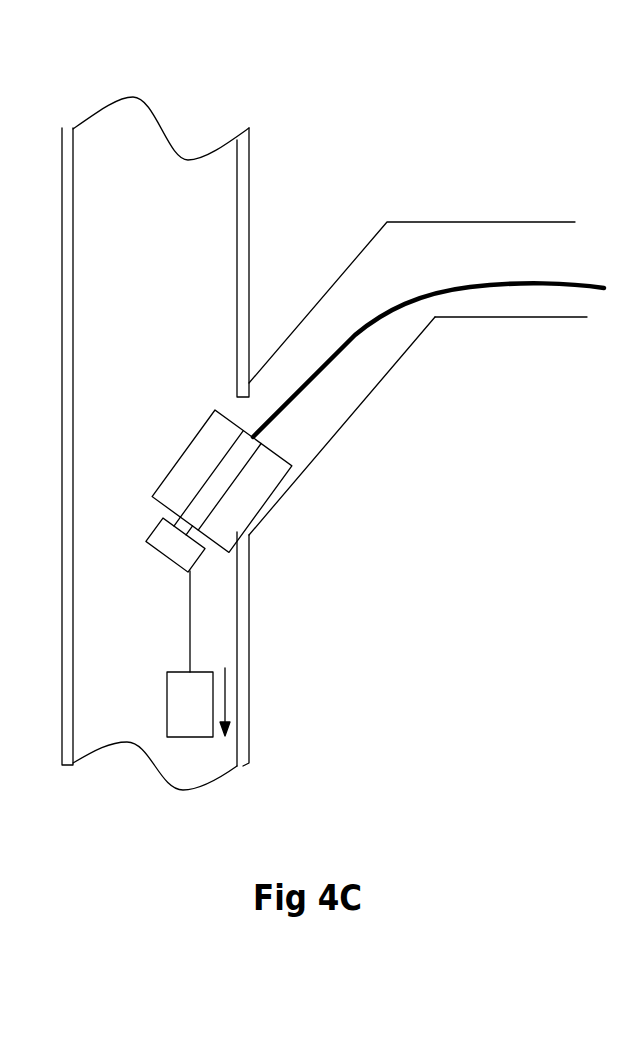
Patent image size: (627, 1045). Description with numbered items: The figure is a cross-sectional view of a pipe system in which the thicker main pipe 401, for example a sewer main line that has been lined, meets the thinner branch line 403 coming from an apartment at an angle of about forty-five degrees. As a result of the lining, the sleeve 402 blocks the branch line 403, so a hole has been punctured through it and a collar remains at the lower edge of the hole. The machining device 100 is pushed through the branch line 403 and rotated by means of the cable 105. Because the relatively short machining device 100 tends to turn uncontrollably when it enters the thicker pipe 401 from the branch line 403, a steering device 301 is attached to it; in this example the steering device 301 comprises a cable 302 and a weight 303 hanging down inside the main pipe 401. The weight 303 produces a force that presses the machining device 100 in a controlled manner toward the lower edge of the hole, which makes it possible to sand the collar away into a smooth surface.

The pipe 401 is at (133, 117).
The branch line 403 is at (413, 222).
The sleeve 402 is at (249, 538).
The cable 105 is at (578, 280).
The machining device 100 is at (205, 442).
The steering device 301 is at (143, 533).
The cable 302 is at (190, 605).
The weight 303 is at (168, 685).